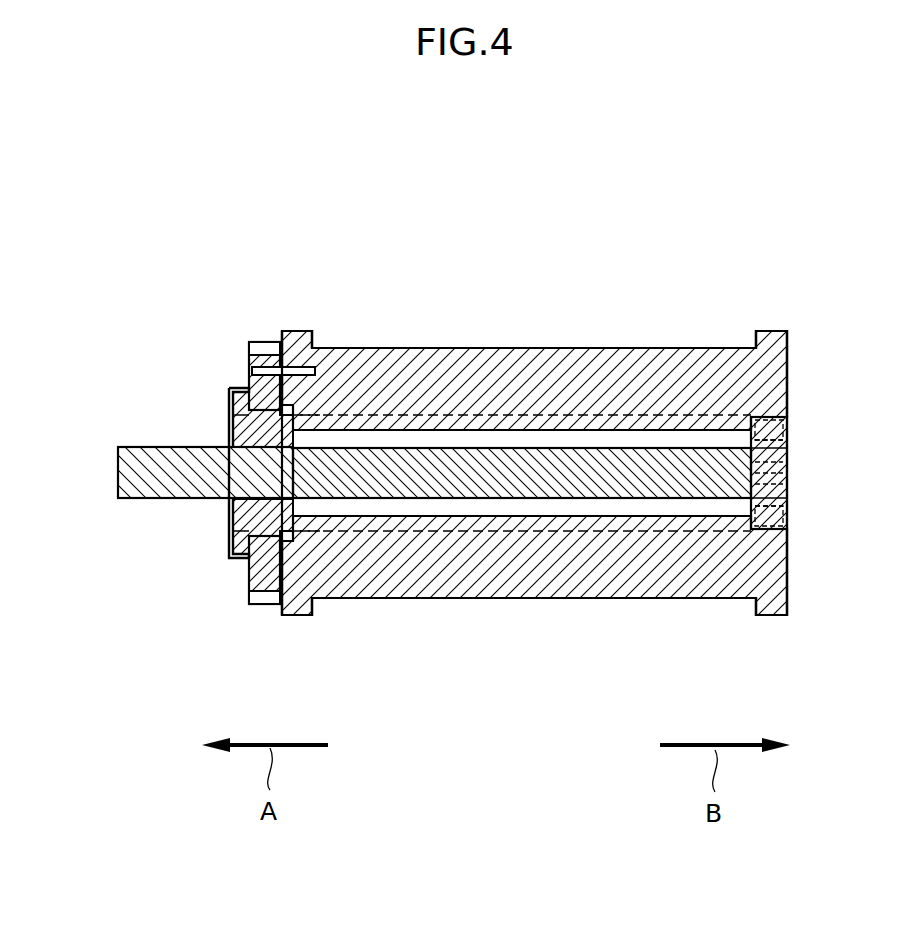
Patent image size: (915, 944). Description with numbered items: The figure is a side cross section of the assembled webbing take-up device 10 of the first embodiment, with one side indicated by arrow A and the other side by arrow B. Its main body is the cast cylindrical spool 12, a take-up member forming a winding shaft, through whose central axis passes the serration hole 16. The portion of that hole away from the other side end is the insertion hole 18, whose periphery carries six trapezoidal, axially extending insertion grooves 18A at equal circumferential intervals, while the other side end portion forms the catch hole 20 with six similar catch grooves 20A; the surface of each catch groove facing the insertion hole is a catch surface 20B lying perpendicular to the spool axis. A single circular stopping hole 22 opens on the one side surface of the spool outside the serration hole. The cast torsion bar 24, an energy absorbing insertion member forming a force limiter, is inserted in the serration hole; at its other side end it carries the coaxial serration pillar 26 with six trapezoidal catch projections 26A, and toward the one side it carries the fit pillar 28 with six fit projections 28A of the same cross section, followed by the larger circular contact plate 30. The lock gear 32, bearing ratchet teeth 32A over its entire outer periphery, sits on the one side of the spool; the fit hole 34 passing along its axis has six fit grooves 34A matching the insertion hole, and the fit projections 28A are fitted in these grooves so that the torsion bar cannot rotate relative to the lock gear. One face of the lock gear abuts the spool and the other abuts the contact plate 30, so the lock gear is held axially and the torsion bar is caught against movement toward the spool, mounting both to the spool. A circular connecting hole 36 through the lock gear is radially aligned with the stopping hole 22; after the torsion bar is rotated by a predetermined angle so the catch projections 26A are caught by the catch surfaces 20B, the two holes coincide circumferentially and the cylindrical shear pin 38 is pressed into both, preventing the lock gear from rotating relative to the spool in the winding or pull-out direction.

The webbing take-up device 10 is at (234, 185).
The spool 12 is at (540, 346).
The serration hole 16 is at (658, 440).
The insertion hole 18 is at (449, 428).
The insertion grooves 18A is at (515, 414).
The catch hole 20 is at (789, 458).
The catch grooves 20A is at (787, 425).
The catch surface 20B is at (765, 415).
The stopping hole 22 is at (305, 331).
The torsion bar 24 is at (409, 503).
The serration pillar 26 is at (787, 473).
The catch projections 26A is at (787, 440).
The fit pillar 28 is at (287, 404).
The fit projections 28A is at (247, 419).
The contact plate 30 is at (233, 392).
The lock gear 32 is at (259, 335).
The ratchet teeth 32A is at (266, 341).
The fit hole 34 is at (230, 447).
The fit grooves 34A is at (244, 394).
The connecting hole 36 is at (254, 349).
The shear pin 38 is at (262, 369).